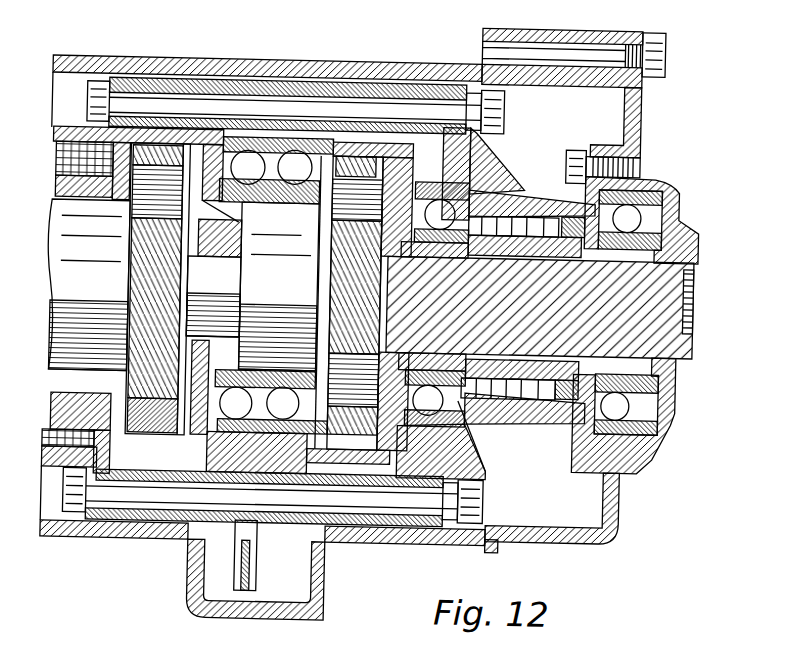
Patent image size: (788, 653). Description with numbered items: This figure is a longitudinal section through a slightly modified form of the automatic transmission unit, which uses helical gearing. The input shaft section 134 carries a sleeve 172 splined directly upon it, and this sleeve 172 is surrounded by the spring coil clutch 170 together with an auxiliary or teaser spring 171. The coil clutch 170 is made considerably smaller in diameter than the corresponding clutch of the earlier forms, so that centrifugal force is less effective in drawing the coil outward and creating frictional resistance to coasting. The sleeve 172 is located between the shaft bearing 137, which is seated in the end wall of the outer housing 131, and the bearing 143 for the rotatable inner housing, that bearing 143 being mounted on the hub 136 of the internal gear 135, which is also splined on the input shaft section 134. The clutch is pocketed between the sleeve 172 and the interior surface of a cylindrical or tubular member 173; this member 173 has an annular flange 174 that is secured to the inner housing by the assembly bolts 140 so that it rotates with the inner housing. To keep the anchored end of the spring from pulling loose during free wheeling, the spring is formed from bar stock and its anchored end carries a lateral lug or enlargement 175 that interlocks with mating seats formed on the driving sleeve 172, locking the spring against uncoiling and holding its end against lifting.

The outer housing 131 is at (633, 114).
The input shaft section 134 is at (663, 314).
The internal gear 135 is at (370, 450).
The hub 136 is at (467, 391).
The shaft bearing 137 is at (653, 187).
The assembly bolts 140 is at (325, 99).
The bearing 143 is at (427, 169).
The coil clutch 170 is at (520, 383).
The auxiliary or teaser spring 171 is at (568, 382).
The sleeve 172 is at (539, 208).
The cylindrical or tubular member 173 is at (622, 177).
The annular flange 174 is at (465, 138).
The lateral lug or enlargement 175 is at (500, 183).